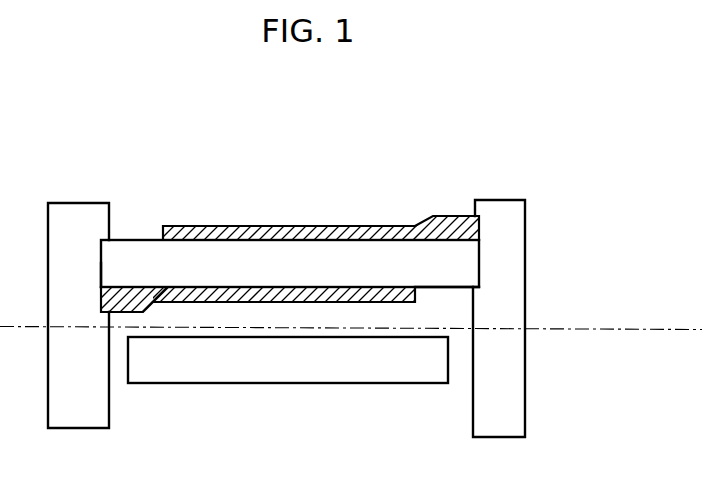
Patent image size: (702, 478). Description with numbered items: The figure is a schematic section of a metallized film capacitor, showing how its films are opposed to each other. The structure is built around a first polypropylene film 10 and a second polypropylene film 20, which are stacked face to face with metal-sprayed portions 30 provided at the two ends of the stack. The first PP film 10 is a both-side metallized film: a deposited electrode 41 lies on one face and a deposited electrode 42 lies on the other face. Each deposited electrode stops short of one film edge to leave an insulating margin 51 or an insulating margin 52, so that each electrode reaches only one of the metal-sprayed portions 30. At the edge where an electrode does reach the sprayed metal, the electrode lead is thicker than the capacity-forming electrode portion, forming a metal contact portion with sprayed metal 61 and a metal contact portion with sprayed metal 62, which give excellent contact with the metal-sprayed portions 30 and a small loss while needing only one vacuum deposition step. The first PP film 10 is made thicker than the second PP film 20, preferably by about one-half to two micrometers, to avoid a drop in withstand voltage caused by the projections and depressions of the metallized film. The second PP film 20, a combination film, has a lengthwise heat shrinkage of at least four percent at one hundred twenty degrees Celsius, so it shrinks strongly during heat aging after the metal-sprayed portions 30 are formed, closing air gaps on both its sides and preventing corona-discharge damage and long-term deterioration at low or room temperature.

The first polypropylene film 10 is at (458, 262).
The second polypropylene film 20 is at (432, 363).
The metal-sprayed portions 30 is at (508, 302).
The deposited electrode 41 is at (210, 233).
The deposited electrode 42 is at (303, 288).
The insulating margin 51 is at (142, 230).
The insulating margin 52 is at (438, 297).
The metal contact portion with sprayed metal 61 is at (105, 297).
The metal contact portion with sprayed metal 62 is at (468, 222).